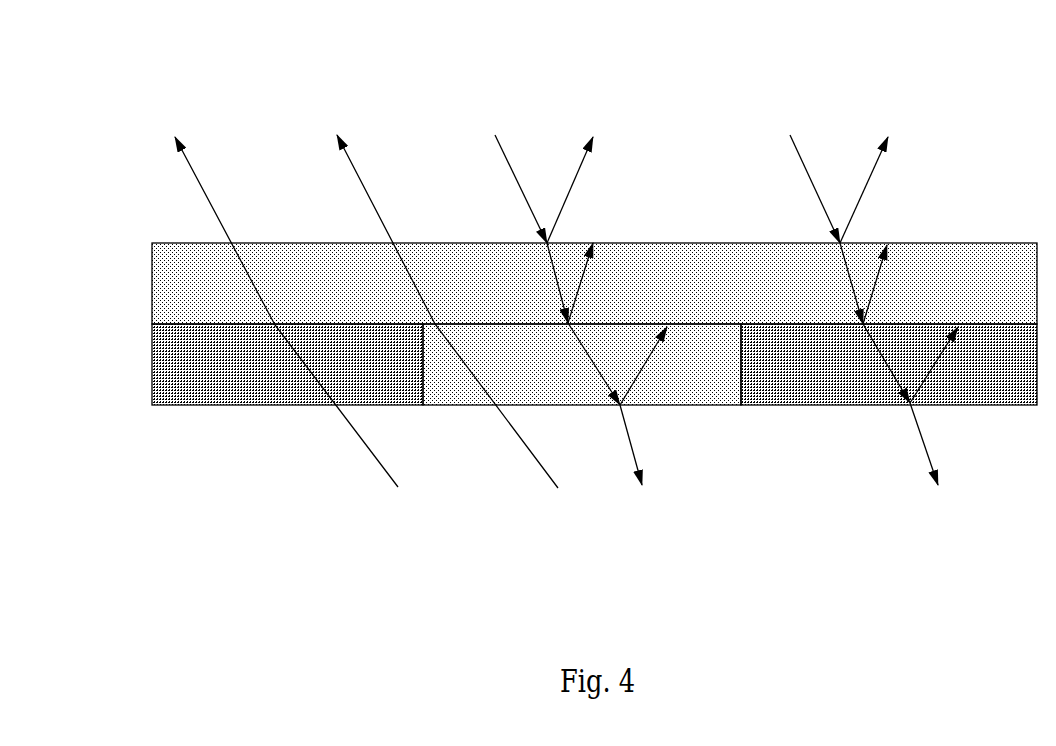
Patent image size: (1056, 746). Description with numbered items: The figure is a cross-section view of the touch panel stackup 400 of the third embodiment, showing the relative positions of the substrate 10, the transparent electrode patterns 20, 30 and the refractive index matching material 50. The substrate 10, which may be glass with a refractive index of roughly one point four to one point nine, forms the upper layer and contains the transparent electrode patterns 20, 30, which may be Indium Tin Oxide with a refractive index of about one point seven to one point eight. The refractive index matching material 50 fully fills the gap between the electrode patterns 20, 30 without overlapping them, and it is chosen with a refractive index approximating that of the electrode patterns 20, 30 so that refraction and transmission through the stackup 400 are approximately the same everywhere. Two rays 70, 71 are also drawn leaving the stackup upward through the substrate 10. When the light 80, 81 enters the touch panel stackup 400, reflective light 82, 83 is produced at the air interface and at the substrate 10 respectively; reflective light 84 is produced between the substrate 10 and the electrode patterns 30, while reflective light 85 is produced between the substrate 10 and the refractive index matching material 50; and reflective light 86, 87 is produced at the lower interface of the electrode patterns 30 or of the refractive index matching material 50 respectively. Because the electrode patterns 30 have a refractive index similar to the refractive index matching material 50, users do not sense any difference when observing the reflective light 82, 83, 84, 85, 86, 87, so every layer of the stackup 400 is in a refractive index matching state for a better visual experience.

The touch panel stackup 400 is at (560, 255).
The substrate 10 is at (237, 283).
The transparent electrode pattern 20 is at (203, 380).
The refractive index matching material 50 is at (457, 382).
The transparent electrode pattern 30 is at (793, 378).
The emitted light ray 70 is at (296, 338).
The emitted light ray 71 is at (457, 337).
The light 80 is at (544, 309).
The light 81 is at (840, 295).
The reflective light 82 is at (886, 188).
The reflective light 83 is at (593, 188).
The reflective light 84 is at (905, 284).
The reflective light 85 is at (610, 283).
The reflective light 86 is at (956, 365).
The reflective light 87 is at (666, 366).